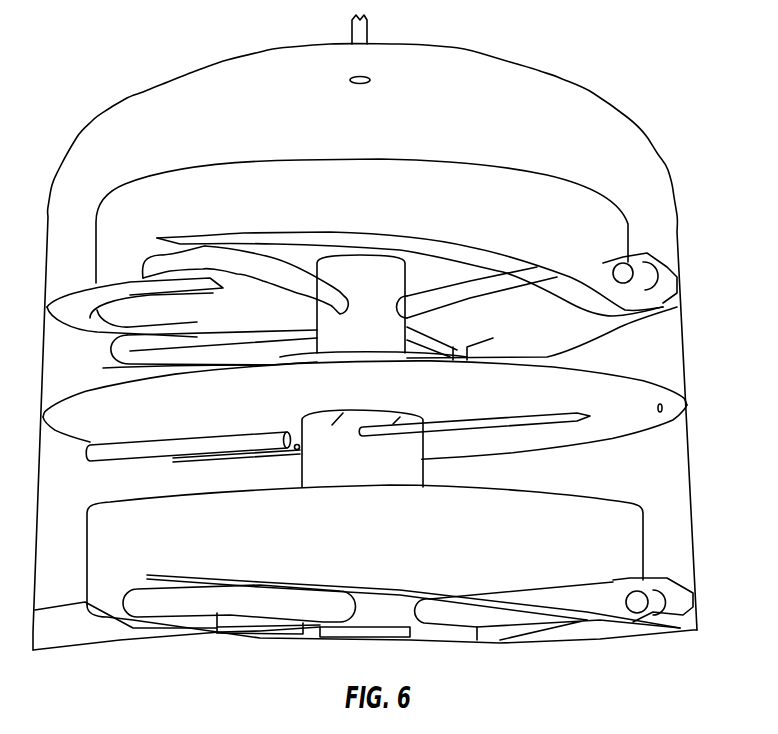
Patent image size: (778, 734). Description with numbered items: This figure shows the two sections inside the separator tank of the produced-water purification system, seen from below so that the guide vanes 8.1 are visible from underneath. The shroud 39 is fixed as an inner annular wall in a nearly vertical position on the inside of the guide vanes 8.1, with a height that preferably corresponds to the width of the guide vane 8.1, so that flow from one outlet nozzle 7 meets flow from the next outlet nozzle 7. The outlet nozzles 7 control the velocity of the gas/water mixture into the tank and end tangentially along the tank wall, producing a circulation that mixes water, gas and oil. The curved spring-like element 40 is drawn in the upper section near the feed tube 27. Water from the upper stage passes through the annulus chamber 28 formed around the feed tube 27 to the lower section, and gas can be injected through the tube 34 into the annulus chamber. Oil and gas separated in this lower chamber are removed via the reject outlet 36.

The outlet nozzle 7 is at (647, 275).
The guide vane 8.1 is at (663, 273).
The feed tube 27 is at (384, 293).
The annulus chamber 28 is at (362, 470).
The gas addition tube 34 is at (522, 425).
The reject outlet 36 is at (172, 445).
The shroud 39 is at (543, 223).
The spiral spring 40 is at (227, 333).